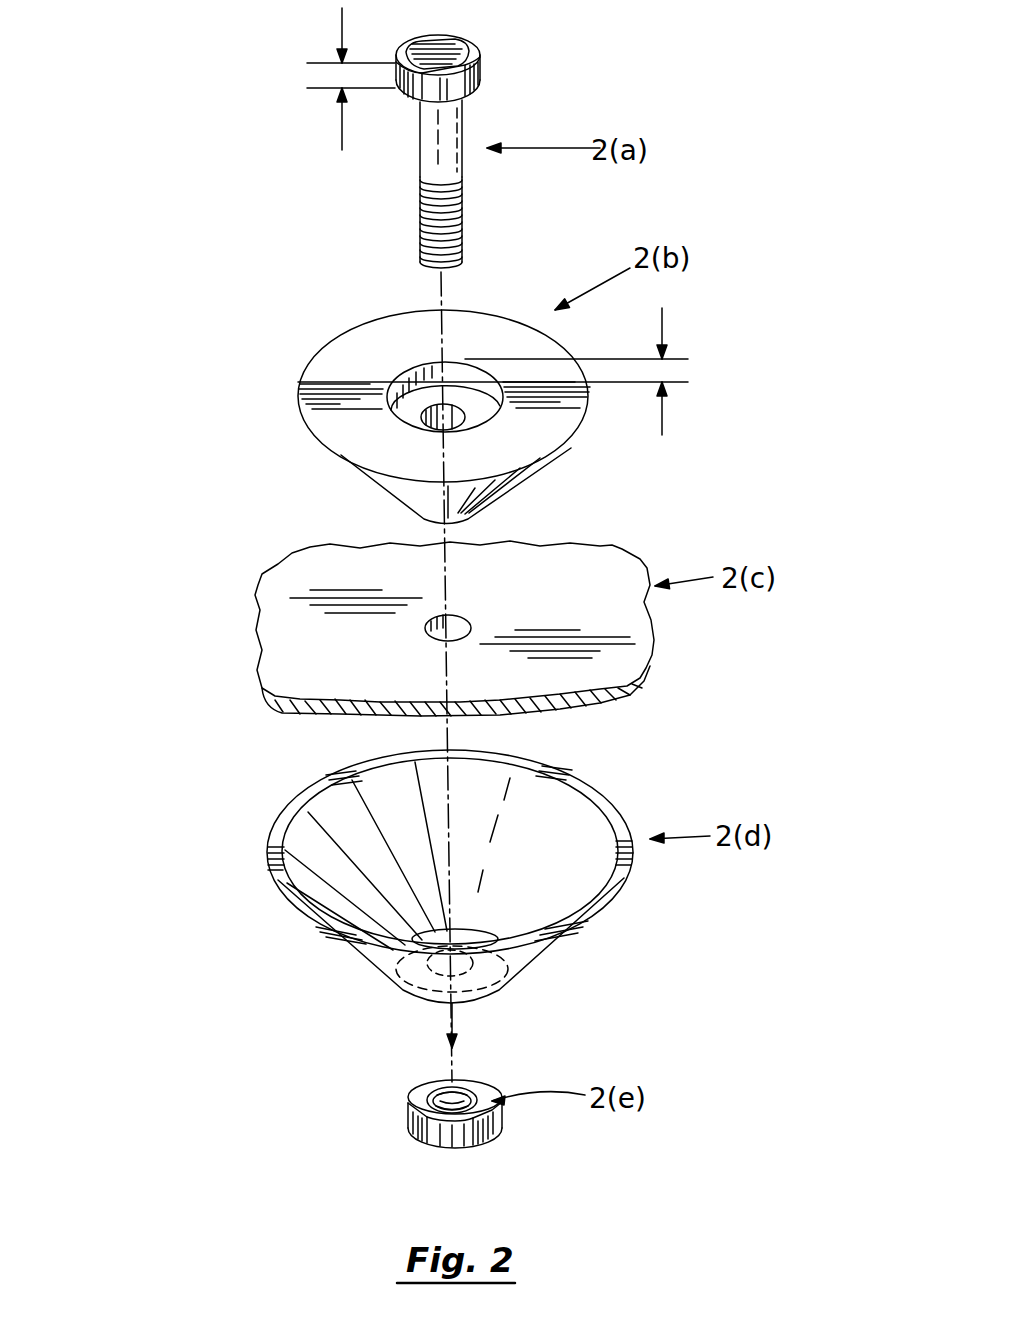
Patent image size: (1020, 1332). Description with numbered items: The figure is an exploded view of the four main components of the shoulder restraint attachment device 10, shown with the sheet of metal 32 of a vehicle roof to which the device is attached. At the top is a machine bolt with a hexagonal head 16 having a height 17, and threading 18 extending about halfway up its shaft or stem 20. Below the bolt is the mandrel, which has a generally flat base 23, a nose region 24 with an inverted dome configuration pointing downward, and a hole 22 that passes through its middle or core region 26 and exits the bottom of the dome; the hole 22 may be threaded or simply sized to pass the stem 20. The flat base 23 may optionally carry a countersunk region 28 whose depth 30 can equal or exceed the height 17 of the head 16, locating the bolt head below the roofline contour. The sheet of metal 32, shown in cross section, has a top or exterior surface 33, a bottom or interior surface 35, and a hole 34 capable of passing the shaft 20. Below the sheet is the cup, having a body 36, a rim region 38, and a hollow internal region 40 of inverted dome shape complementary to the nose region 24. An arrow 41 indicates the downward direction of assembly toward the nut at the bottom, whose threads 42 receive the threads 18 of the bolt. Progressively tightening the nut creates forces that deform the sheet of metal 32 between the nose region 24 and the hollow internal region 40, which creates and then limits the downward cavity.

The shoulder restraint attachment device 10 is at (255, 307).
The hexagonal head 16 is at (443, 62).
The height 17 is at (340, 76).
The threading 18 is at (462, 222).
The shaft or stem 20 is at (420, 175).
The hole 22 is at (500, 420).
The flat base 23 is at (333, 397).
The nose region 24 is at (420, 518).
The middle or core region 26 is at (395, 409).
The countersunk region 28 is at (457, 372).
The depth 30 is at (660, 372).
The sheet of metal 32 is at (320, 710).
The top or exterior surface 33 is at (583, 580).
The hole 34 is at (435, 633).
The bottom or interior surface 35 is at (583, 702).
The body 36 is at (518, 964).
The rim region 38 is at (267, 853).
The hollow internal region 40 is at (543, 847).
The assembly direction arrow 41 is at (455, 1012).
The threads 42 is at (412, 1098).